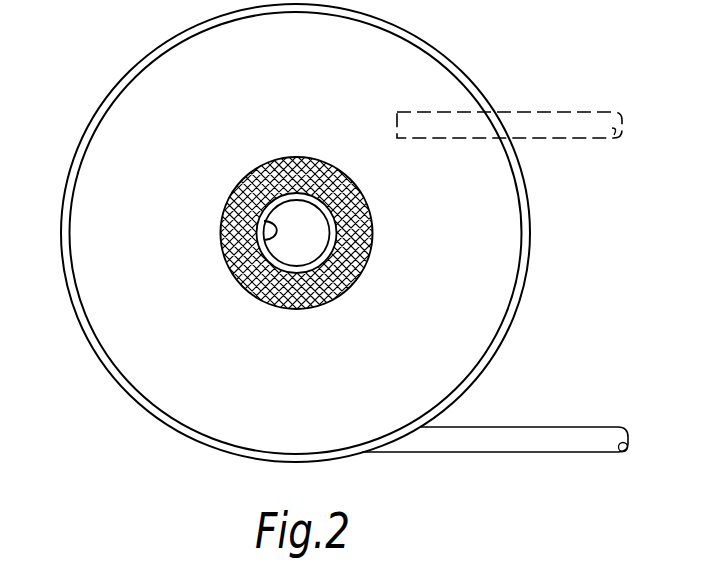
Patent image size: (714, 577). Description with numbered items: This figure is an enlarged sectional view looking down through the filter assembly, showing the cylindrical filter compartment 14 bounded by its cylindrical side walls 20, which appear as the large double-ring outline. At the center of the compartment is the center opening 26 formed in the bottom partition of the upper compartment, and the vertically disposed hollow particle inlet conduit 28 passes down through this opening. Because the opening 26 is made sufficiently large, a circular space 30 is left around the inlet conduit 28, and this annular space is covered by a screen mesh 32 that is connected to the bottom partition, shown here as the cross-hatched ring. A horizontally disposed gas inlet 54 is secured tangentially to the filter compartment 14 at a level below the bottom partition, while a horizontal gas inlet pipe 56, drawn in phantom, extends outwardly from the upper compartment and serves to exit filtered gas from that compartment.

The filter compartment 14 is at (529, 219).
The cylindrical side walls 20 is at (90, 124).
The center opening 26 is at (367, 212).
The particle inlet conduit 28 is at (267, 222).
The circular space 30 is at (272, 179).
The screen mesh 32 is at (258, 289).
The gas inlet 54 is at (543, 428).
The gas inlet pipe 56 is at (565, 111).